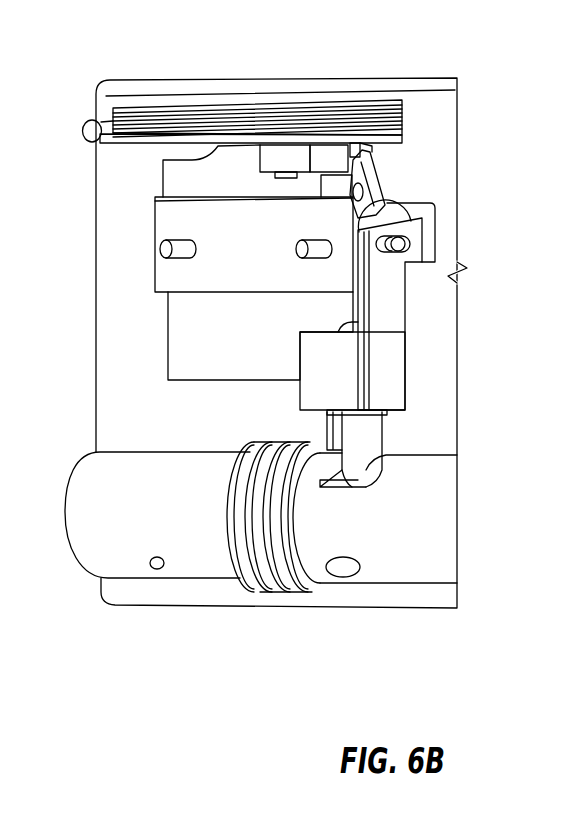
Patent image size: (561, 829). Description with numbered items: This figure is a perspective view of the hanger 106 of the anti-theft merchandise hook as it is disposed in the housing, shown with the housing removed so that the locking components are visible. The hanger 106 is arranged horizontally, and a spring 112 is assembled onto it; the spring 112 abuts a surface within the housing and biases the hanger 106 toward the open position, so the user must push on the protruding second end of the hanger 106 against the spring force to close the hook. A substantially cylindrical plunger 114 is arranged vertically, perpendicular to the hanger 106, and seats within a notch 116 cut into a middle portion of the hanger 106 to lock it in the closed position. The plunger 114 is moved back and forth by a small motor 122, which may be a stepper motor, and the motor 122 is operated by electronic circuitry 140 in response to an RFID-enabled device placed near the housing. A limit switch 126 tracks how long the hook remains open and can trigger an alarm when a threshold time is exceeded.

The hanger 106 is at (78, 566).
The spring 112 is at (320, 575).
The plunger 114 is at (373, 437).
The notch 116 is at (340, 488).
The motor 122 is at (193, 268).
The limit switch 126 is at (290, 160).
The electronic circuitry 140 is at (190, 317).